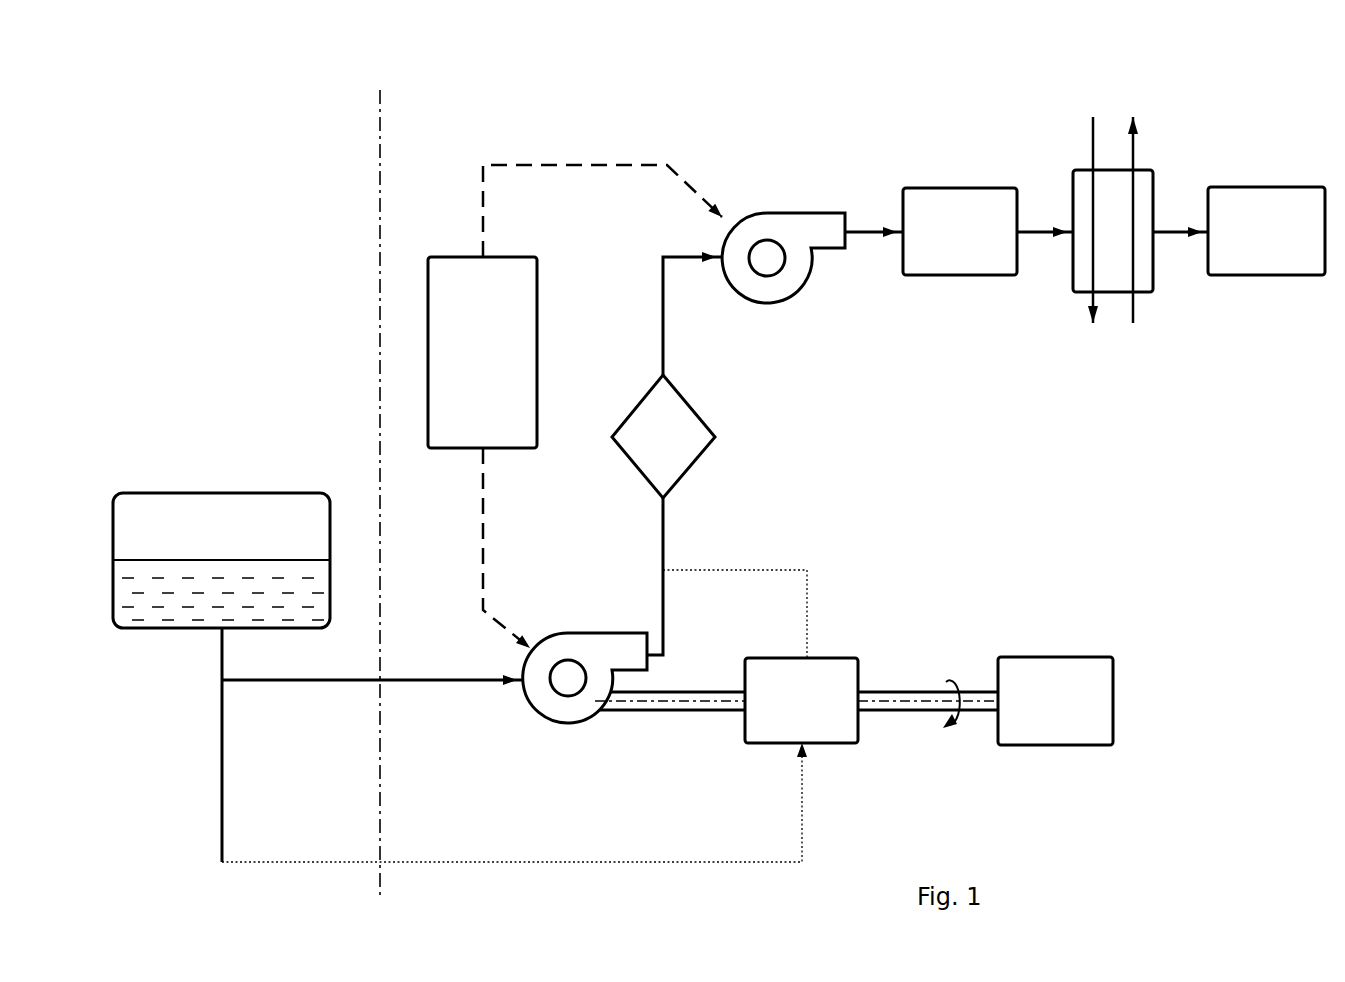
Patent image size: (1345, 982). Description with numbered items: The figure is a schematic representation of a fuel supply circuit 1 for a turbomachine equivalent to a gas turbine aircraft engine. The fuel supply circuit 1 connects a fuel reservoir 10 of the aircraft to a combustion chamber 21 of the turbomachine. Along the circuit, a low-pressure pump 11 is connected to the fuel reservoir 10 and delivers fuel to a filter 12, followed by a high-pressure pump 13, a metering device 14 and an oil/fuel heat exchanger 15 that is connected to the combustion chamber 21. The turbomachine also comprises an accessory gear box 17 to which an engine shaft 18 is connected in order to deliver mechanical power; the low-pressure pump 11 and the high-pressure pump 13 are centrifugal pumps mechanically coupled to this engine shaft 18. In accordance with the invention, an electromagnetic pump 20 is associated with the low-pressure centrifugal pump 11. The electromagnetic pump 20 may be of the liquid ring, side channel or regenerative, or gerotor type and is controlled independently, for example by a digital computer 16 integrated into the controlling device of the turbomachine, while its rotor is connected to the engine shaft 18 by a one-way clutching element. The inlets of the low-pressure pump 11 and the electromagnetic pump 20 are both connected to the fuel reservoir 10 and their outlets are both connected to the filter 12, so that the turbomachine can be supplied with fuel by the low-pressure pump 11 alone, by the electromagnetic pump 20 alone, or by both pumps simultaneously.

The fuel supply circuit 1 is at (608, 95).
The fuel reservoir 10 is at (203, 537).
The low-pressure pump 11 is at (565, 723).
The filter 12 is at (650, 450).
The high-pressure pump 13 is at (766, 303).
The metering device 14 is at (947, 245).
The oil/fuel heat exchanger 15 is at (1073, 185).
The digital computer 16 is at (468, 365).
The accessory gear box 17 is at (1044, 713).
The engine shaft 18 is at (701, 691).
The electromagnetic pump 20 is at (790, 713).
The combustion chamber 21 is at (1254, 245).